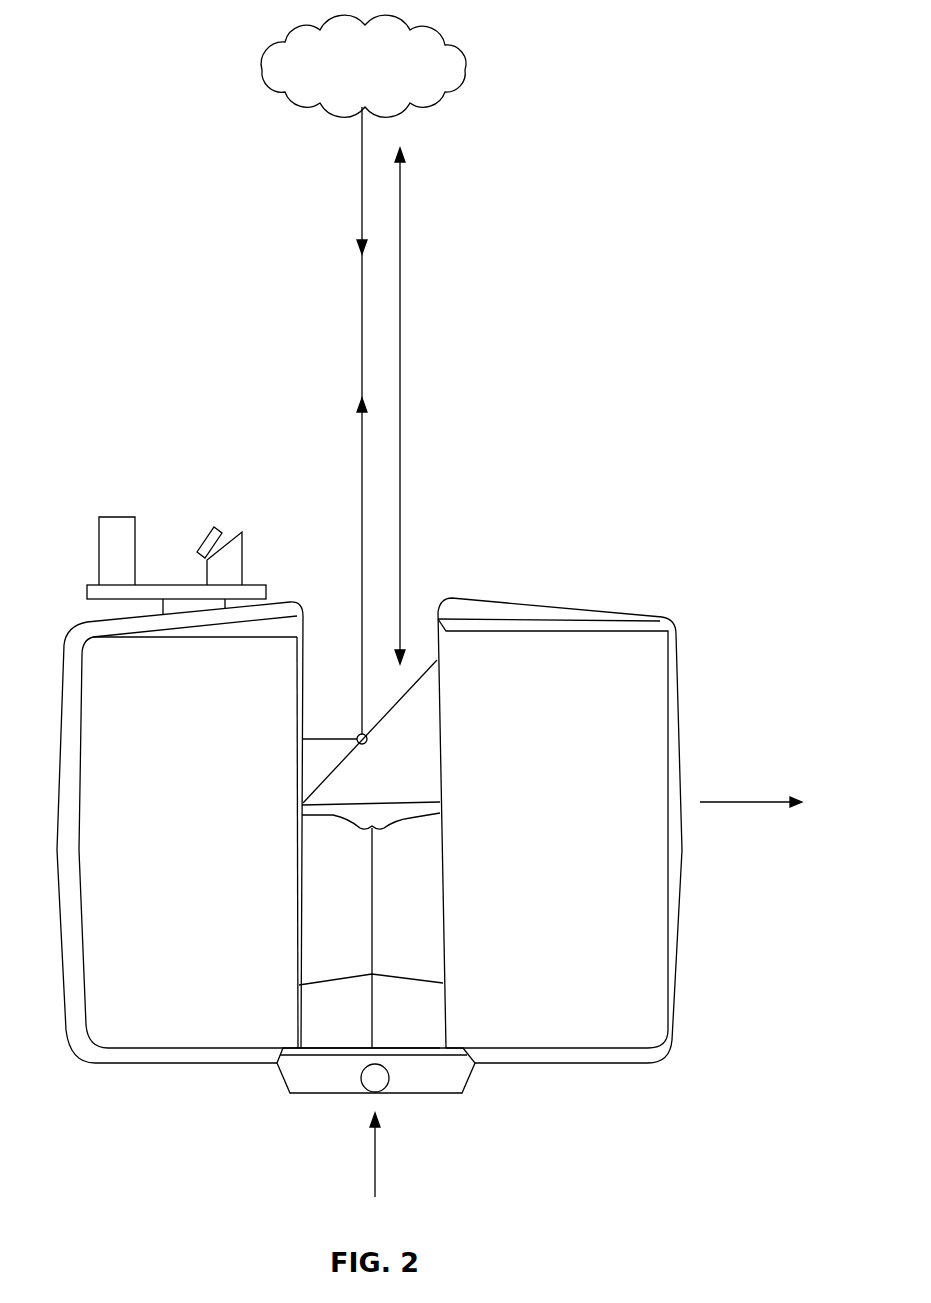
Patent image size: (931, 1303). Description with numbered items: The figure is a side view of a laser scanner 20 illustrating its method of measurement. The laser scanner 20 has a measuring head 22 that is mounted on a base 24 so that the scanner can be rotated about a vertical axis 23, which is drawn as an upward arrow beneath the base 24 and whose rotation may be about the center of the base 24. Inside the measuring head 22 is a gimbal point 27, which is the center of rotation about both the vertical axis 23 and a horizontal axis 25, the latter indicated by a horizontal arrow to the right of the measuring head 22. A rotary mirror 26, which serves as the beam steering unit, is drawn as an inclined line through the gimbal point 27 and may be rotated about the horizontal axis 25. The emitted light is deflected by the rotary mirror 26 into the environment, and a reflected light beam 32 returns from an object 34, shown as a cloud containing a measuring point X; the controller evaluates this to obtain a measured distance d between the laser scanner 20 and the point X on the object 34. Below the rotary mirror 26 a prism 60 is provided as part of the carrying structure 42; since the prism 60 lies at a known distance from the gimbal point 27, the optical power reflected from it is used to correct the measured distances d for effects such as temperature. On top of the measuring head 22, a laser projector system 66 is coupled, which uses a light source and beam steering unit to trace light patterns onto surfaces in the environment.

The laser scanner 20 is at (208, 209).
The measuring head 22 is at (577, 531).
The vertical axis 23 is at (377, 1157).
The base 24 is at (282, 1082).
The horizontal axis 25 is at (751, 801).
The rotary mirror 26 is at (344, 762).
The gimbal point 27 is at (369, 740).
The reflected light beam 32 is at (362, 219).
The object 34 is at (413, 27).
The carrying structure 42 is at (462, 1119).
The prism 60 is at (378, 830).
The laser projector system 66 is at (125, 473).
The distance d is at (400, 407).